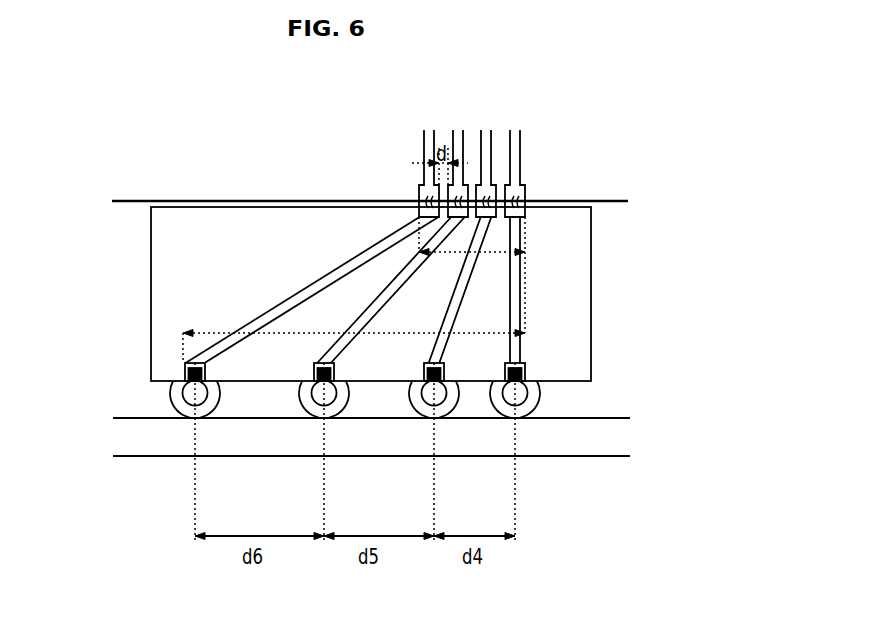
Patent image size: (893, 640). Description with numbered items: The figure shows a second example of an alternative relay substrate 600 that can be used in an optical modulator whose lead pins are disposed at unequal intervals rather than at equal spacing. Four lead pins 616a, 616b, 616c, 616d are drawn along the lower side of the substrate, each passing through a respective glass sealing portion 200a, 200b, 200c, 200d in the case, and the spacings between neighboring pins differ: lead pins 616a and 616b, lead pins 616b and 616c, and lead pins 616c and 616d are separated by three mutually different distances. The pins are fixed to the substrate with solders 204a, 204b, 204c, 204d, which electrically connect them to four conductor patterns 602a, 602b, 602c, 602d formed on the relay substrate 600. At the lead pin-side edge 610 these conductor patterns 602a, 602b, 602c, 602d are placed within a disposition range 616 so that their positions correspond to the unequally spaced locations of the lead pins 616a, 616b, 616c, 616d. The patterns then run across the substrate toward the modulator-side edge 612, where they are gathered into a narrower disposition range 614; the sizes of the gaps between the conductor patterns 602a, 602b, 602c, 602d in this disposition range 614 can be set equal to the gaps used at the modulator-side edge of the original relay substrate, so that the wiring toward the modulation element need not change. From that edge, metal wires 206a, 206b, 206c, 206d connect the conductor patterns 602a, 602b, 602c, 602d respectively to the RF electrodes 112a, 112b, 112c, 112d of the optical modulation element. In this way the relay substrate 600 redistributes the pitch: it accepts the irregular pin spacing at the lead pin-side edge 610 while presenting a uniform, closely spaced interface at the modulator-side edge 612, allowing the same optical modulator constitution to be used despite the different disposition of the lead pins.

The relay substrate 600 is at (170, 338).
The lead pin-side edge 610 is at (577, 382).
The modulator-side edge 612 is at (218, 201).
The disposition range 614 is at (434, 255).
The disposition range 616 is at (425, 333).
The RF electrode 112a is at (520, 142).
The RF electrode 112b is at (489, 138).
The RF electrode 112c is at (453, 133).
The RF electrode 112d is at (424, 143).
The metal wire 206a is at (524, 193).
The metal wire 206b is at (494, 188).
The metal wire 206c is at (449, 190).
The metal wire 206d is at (419, 192).
The conductor pattern 602a is at (521, 231).
The conductor pattern 602b is at (465, 285).
The conductor pattern 602c is at (372, 307).
The conductor pattern 602d is at (347, 267).
The solder 204a is at (522, 373).
The solder 204b is at (426, 368).
The solder 204c is at (314, 366).
The solder 204d is at (183, 371).
The glass sealing portion 200a is at (505, 403).
The glass sealing portion 200b is at (410, 402).
The glass sealing portion 200c is at (300, 402).
The glass sealing portion 200d is at (175, 394).
The lead pin 616a is at (520, 398).
The lead pin 616b is at (423, 402).
The lead pin 616c is at (318, 402).
The lead pin 616d is at (190, 384).